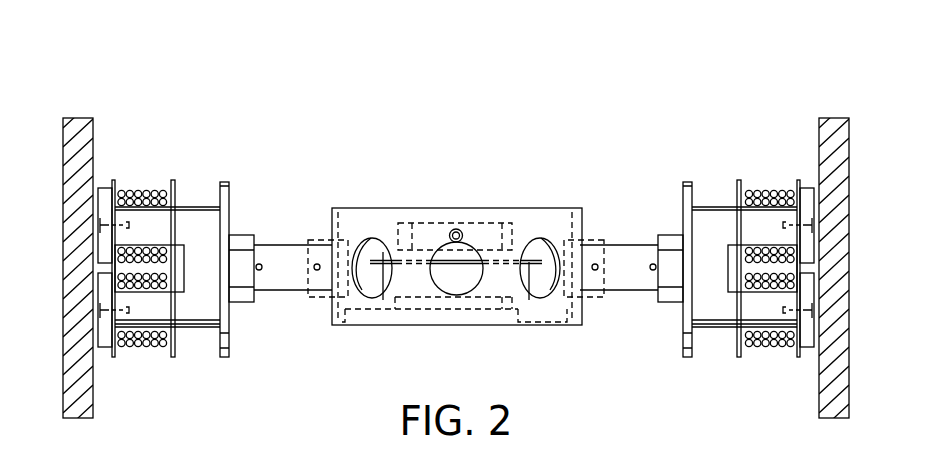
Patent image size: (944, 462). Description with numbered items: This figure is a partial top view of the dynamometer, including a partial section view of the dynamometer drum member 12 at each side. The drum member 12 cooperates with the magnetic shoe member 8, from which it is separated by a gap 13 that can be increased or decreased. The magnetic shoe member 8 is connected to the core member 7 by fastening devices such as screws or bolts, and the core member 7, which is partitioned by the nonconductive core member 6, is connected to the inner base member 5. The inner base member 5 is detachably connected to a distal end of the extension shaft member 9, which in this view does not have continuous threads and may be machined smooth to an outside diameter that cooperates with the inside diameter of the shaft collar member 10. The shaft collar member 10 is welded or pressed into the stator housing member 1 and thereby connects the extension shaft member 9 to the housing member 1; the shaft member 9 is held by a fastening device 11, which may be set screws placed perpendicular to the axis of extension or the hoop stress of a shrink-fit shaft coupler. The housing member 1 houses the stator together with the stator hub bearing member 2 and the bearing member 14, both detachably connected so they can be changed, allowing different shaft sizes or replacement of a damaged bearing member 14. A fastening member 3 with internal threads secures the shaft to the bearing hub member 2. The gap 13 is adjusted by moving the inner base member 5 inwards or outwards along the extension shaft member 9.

The stator housing member 1 is at (548, 318).
The stator hub bearing member 2 is at (363, 241).
The fastening member 3 is at (242, 234).
The inner base member 5 is at (225, 180).
The nonconductive core member 6 is at (182, 188).
The core member 7 is at (197, 330).
The magnetic shoe member 8 is at (103, 350).
The extension shaft member 9 is at (282, 292).
The shaft collar member 10 is at (322, 298).
The fastening device 11 is at (320, 255).
The dynamometer drum member 12 is at (79, 118).
The gap 13 is at (95, 187).
The bearing member 14 is at (397, 239).